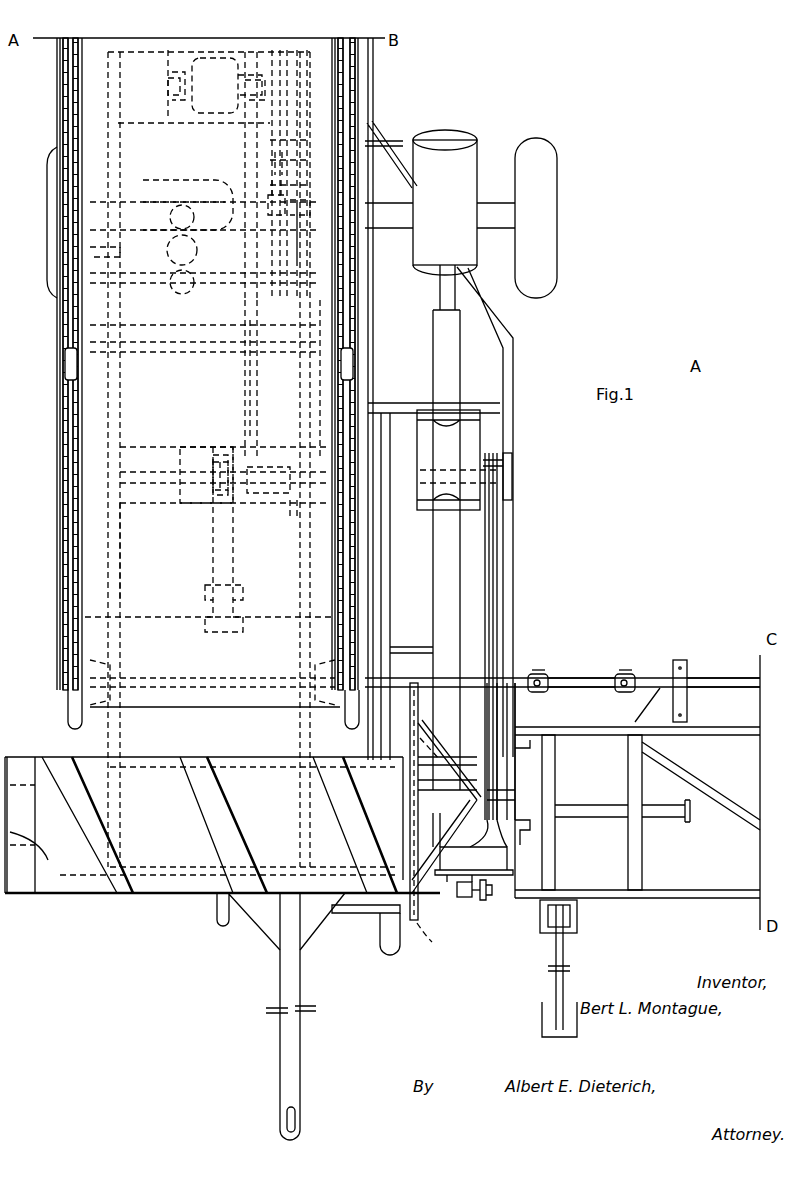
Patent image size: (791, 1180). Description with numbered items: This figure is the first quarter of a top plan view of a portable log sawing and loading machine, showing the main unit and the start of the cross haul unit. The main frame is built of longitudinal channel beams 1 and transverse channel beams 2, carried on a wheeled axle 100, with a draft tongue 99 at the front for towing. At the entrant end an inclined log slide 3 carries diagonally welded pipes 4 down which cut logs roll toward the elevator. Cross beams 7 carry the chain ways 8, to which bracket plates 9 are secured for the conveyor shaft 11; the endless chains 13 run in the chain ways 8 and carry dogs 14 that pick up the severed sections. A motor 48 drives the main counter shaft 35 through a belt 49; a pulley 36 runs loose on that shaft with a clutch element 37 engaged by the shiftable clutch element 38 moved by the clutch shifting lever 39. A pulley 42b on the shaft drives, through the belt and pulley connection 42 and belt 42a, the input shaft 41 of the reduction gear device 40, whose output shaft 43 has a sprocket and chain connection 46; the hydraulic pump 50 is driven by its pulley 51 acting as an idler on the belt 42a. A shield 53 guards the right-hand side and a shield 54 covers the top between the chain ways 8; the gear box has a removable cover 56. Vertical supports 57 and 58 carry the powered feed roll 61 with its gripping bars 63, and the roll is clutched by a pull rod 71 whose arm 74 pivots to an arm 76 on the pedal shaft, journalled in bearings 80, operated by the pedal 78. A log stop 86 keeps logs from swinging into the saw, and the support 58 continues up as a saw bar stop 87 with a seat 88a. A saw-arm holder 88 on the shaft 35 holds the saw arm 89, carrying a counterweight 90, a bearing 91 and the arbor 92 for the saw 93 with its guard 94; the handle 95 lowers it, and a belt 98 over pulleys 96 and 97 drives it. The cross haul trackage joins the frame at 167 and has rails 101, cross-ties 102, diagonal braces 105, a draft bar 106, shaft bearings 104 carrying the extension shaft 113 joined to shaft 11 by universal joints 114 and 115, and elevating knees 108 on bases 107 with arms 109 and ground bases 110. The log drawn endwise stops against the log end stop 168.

The longitudinal channel irons or beams 1 is at (117, 402).
The transverse channel irons or beams 2 is at (170, 362).
The inclined platform or log slide 3 is at (185, 894).
The diagonally disposed pipes 4 is at (118, 894).
The cross beams 7 is at (208, 364).
The chain ways 8 is at (334, 431).
The bracket plates 9 is at (170, 605).
The conveyor shaft 11 is at (186, 680).
The endless chains 13 is at (68, 436).
The dogs 14 is at (67, 723).
The main counter shaft 35 is at (400, 472).
The pulley 36 is at (243, 505).
The clutch element 37 is at (232, 455).
The shiftable clutch element 38 is at (212, 496).
The clutch shifting lever 39 is at (237, 560).
The reduction gear device 40 is at (215, 55).
The input shaft 41 is at (268, 96).
The belt and pulley connection 42 is at (265, 55).
The belt 42a is at (275, 154).
The pulley 42b is at (294, 512).
The output shaft 43 is at (168, 86).
The sprocket and chain connection 46 is at (173, 50).
The motor 48 is at (168, 195).
The belt 49 is at (252, 405).
The hydraulic pump 50 is at (295, 203).
The pulley 51 is at (270, 200).
The shield 53 is at (369, 299).
The shield 54 is at (160, 557).
The removable cover 56 is at (433, 665).
The vertical support 57 is at (447, 882).
The vertical support 58 is at (470, 757).
The powered feed roll 61 is at (482, 850).
The inverted V-shaped bars 63 is at (498, 840).
The pull rod 71 is at (490, 901).
The arm 74 is at (487, 887).
The arm 76 is at (483, 915).
The pedal 78 is at (392, 952).
The bearings 80 is at (463, 897).
The log stop 86 is at (515, 713).
The saw bar stop 87 is at (432, 770).
The saw-arm holder 88 is at (425, 500).
The recess or seat 88a is at (432, 796).
The saw arm or frame 89 is at (455, 378).
The counterweight 90 is at (477, 176).
The bearing 91 is at (440, 816).
The saw arbor or shaft 92 is at (485, 828).
The saw 93 is at (434, 941).
The guard 94 is at (420, 705).
The handle 95 is at (356, 913).
The pulley 96 is at (507, 806).
The pulley 97 is at (513, 466).
The belt 98 is at (495, 566).
The draft tongue 99 is at (300, 1042).
The wheeled axle 100 is at (552, 187).
The rails 101 is at (735, 735).
The cross-ties 102 is at (548, 775).
The shaft bearings 104 is at (686, 676).
The diagonal braces 105 is at (735, 802).
The draft bar 106 is at (663, 806).
The base 107 is at (575, 930).
The elevating knee 108 is at (570, 915).
The elevating arm 109 is at (565, 959).
The base 110 is at (545, 1010).
The extension shaft 113 is at (745, 685).
The universal joint 114 is at (548, 674).
The universal joint 115 is at (588, 688).
The connection to main frame 167 is at (530, 847).
The log end stop 168 is at (46, 846).